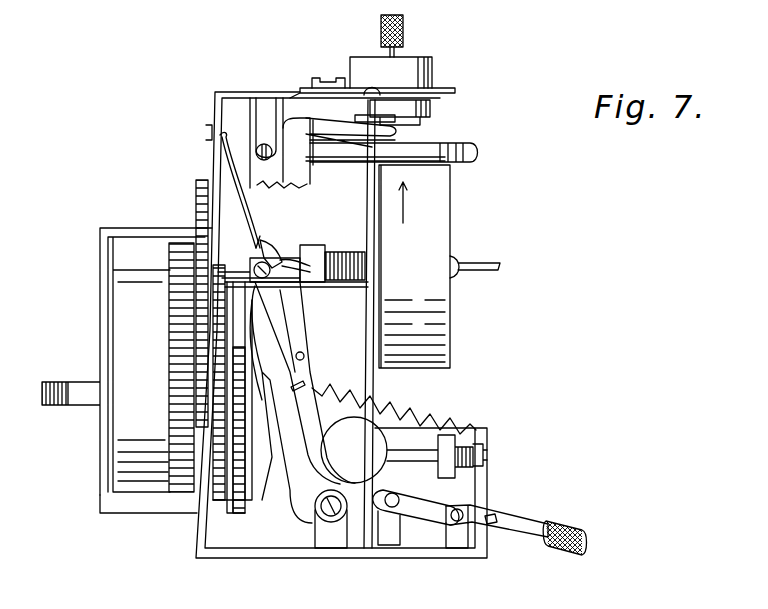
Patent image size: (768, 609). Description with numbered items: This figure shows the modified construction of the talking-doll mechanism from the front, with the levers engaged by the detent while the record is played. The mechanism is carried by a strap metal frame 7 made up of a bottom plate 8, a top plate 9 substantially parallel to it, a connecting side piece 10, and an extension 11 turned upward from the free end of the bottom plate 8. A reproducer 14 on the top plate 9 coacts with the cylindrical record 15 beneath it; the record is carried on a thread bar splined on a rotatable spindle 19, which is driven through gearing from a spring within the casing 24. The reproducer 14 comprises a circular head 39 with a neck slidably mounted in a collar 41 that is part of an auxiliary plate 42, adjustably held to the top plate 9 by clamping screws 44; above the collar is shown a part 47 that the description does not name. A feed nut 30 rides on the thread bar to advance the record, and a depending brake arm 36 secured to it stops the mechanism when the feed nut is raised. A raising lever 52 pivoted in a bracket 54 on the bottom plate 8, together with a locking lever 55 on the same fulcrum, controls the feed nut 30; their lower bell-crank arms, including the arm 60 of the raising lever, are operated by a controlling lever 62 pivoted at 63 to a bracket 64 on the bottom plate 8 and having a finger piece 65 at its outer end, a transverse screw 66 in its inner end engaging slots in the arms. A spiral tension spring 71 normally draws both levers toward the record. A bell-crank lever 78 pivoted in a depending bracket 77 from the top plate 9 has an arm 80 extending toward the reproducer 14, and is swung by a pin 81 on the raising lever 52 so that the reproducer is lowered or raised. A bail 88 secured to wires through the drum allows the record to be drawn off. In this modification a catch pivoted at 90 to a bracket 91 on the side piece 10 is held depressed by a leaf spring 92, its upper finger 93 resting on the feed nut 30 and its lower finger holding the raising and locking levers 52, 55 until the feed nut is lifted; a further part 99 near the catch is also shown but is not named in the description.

The frame 7 is at (196, 520).
The bottom plate 8 is at (238, 548).
The top plate 9 is at (238, 92).
The side piece 10 is at (210, 155).
The extension 11 is at (488, 478).
The reproducer 14 is at (440, 130).
The cylindrical record 15 is at (435, 228).
The spindle 19 is at (366, 272).
The casing 24 is at (127, 361).
The feed nut 30 is at (330, 254).
The brake arm 36 is at (170, 318).
The circular head 39 is at (452, 150).
The collar 41 is at (432, 68).
The auxiliary plate 42 is at (452, 90).
The clamping screws 44 is at (322, 80).
The knob 47 is at (381, 28).
The raising lever 52 is at (300, 312).
The bracket 54 is at (336, 520).
The locking lever 55 is at (285, 340).
The bell-crank arm 60 is at (396, 492).
The controlling lever 62 is at (480, 513).
The pivot 63 is at (452, 552).
The bracket 64 is at (458, 544).
The finger piece 65 is at (586, 543).
The transverse screw 66 is at (394, 508).
The spiral tension spring 71 is at (416, 410).
The depending bracket 77 is at (278, 143).
The bell-crank lever 78 is at (304, 167).
The arm 80 is at (308, 124).
The pin 81 is at (303, 358).
The bail 88 is at (498, 272).
The pivot 90 is at (252, 240).
The bracket 91 is at (259, 265).
The spring 92 is at (260, 212).
The upper finger 93 is at (304, 244).
The pawl 99 is at (272, 246).